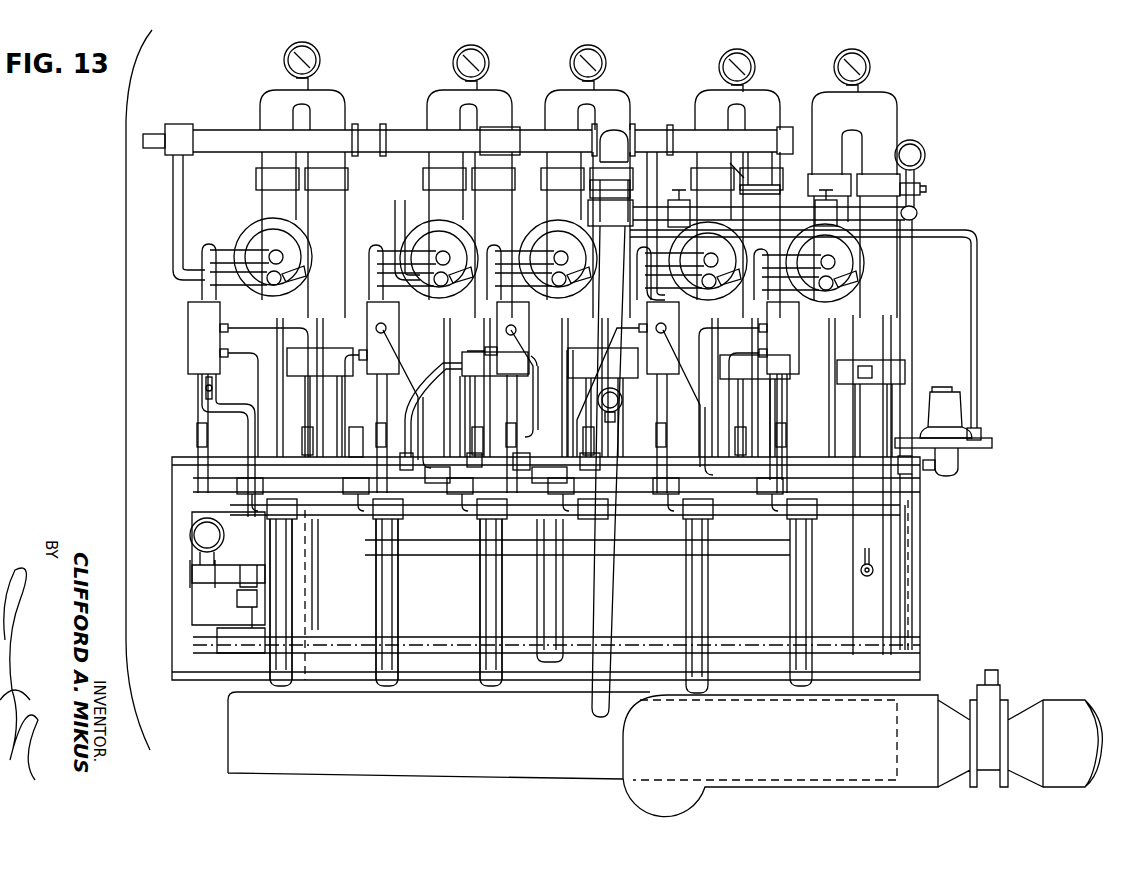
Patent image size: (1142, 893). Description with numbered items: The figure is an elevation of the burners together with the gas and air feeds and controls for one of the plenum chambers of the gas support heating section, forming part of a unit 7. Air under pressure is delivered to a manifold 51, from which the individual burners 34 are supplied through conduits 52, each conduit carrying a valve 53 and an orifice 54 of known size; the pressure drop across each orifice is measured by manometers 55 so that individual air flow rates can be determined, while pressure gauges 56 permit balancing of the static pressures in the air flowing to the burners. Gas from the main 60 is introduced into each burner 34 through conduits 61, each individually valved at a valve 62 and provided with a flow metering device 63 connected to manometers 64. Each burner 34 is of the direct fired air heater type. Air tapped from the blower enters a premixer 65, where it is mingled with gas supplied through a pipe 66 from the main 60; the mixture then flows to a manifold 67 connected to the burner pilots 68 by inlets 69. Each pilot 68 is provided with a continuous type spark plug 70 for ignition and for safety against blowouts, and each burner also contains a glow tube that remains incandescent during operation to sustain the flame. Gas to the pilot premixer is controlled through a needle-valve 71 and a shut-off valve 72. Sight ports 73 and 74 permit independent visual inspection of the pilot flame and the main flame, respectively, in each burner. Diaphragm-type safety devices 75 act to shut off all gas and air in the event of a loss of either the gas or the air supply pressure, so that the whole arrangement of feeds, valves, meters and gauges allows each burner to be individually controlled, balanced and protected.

The unit 7 is at (126, 396).
The burner 34 is at (438, 238).
The manifold 51 is at (228, 738).
The conduit 52 is at (880, 150).
The valve 53 is at (875, 570).
The orifice 54 is at (875, 370).
The manometer 55 is at (425, 575).
The pressure gauge 56 is at (572, 52).
The main 60 is at (530, 652).
The conduit 61 is at (370, 298).
The valve 62 is at (782, 438).
The flow metering device 63 is at (690, 335).
The manometer 64 is at (492, 690).
The premixer 65 is at (621, 270).
The pipe 66 is at (978, 270).
The manifold 67 is at (408, 130).
The burner pilot 68 is at (822, 284).
The inlet 69 is at (742, 290).
The spark plug 70 is at (842, 288).
The needle-valve 71 is at (672, 200).
The shut-off valve 72 is at (770, 196).
The sight port 73 is at (268, 252).
The sight port 74 is at (273, 284).
The safety device 75 is at (192, 532).